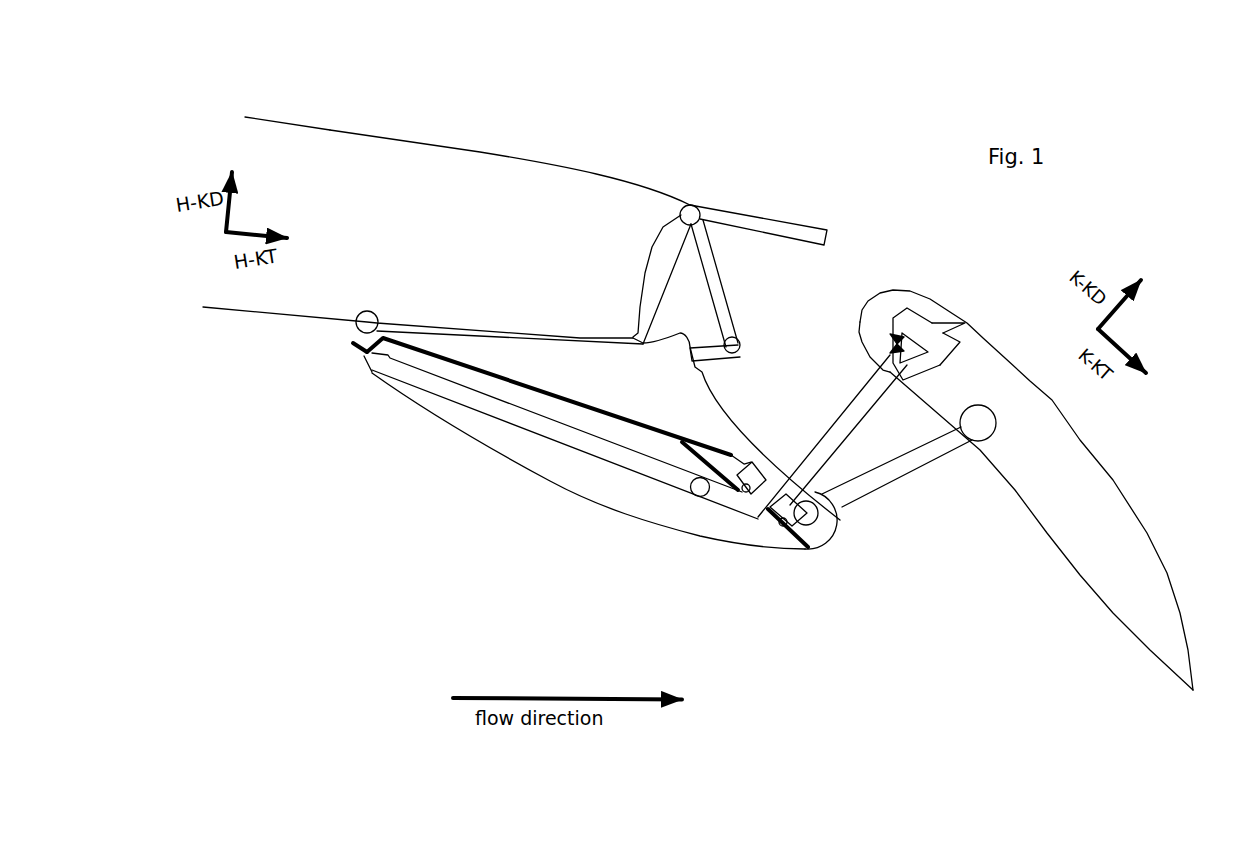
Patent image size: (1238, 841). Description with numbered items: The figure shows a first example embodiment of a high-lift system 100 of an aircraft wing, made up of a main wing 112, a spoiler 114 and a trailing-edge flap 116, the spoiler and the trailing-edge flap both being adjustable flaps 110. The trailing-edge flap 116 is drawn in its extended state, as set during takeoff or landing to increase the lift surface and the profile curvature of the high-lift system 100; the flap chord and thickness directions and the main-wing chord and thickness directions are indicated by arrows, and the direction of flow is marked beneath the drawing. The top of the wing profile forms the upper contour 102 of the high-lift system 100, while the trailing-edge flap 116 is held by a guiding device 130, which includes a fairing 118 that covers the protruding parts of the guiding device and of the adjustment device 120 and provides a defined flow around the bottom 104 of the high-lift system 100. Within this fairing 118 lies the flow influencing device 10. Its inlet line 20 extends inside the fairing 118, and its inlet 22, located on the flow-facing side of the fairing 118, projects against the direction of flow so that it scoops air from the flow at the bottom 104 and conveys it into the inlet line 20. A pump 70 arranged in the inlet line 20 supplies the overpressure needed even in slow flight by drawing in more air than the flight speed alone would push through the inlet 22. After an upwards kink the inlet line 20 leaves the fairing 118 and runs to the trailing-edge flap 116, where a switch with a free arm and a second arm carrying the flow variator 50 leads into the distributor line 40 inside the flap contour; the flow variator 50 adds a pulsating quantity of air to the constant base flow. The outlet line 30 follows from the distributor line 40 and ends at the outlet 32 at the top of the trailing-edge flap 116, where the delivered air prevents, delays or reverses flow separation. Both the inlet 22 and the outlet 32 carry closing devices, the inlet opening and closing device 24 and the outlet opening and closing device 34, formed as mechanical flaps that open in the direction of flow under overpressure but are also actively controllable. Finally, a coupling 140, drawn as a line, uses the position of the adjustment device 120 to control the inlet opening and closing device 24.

The high-lift system 100 is at (652, 108).
The main wing upper surface 102 is at (463, 137).
The bottom of the high-lift system 104 is at (367, 463).
The adjustable flaps 110 is at (720, 213).
The main wing 112 is at (332, 140).
The spoiler 114 is at (772, 223).
The trailing-edge flap 116 is at (1063, 473).
The fairing 118 is at (598, 495).
The flow influencing device 10 is at (550, 453).
The inlet line 20 is at (655, 477).
The inlet 22 is at (370, 358).
The inlet opening and closing device 24 is at (367, 335).
The outlet line 30 is at (944, 322).
The outlet 32 is at (970, 331).
The outlet opening and closing device 34 is at (965, 324).
The distributor line 40 is at (908, 323).
The flow variator 50 is at (890, 343).
The pump 70 is at (700, 497).
The adjustment device 120 is at (773, 523).
The guiding device 130 is at (812, 527).
The coupling 140 is at (665, 435).